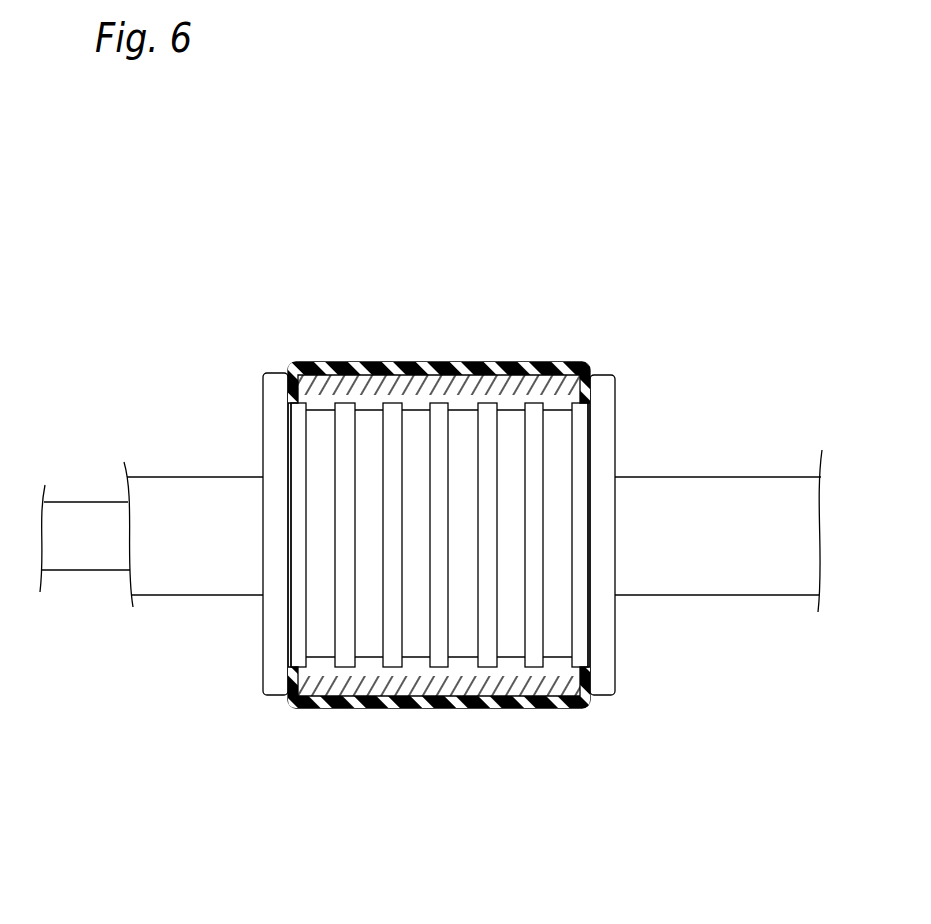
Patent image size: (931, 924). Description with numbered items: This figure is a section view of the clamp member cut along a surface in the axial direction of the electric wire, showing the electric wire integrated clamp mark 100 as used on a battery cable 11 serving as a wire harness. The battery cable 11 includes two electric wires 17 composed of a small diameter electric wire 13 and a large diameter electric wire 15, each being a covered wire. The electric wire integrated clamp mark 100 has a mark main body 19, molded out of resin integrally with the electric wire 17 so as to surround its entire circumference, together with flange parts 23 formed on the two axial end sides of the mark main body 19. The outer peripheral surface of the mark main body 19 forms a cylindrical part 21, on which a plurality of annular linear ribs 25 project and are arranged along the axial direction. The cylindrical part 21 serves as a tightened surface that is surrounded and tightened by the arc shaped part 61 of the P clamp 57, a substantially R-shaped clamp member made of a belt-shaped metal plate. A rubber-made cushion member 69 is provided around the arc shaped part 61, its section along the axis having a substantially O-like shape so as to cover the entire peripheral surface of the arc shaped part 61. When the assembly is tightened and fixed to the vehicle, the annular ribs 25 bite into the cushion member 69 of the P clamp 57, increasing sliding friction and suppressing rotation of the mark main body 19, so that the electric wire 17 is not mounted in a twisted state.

The battery cable 11 is at (342, 231).
The electric wire 17 is at (213, 282).
The small diameter electric wire 13 is at (77, 490).
The large diameter electric wire 15 is at (180, 465).
The mark main body 19 is at (630, 429).
The flange part 23 is at (276, 372).
The electric wire integrated clamp mark 100 is at (305, 315).
The cylindrical part 21 is at (378, 410).
The linear rib 25 is at (439, 412).
The P clamp 57 is at (565, 350).
The arc shaped part 61 is at (432, 690).
The cushion member 69 is at (545, 705).